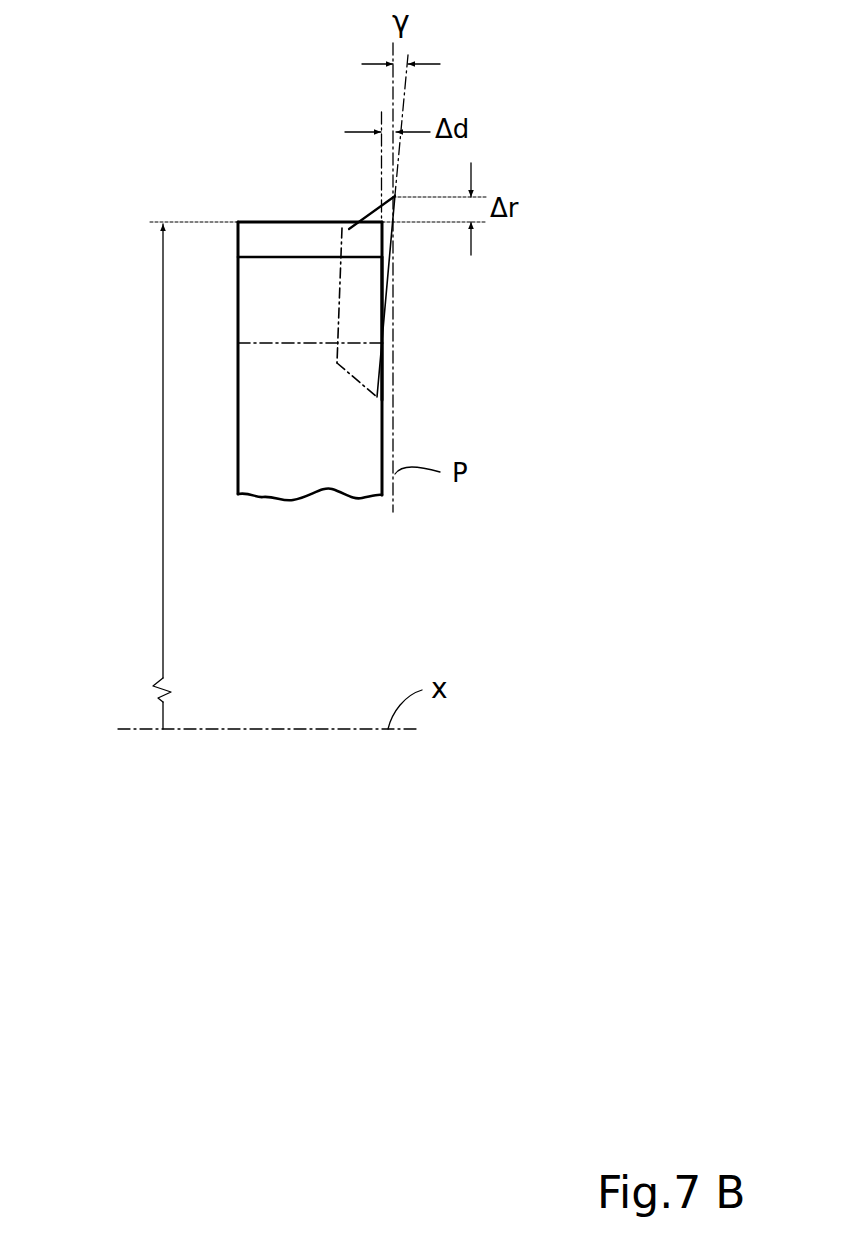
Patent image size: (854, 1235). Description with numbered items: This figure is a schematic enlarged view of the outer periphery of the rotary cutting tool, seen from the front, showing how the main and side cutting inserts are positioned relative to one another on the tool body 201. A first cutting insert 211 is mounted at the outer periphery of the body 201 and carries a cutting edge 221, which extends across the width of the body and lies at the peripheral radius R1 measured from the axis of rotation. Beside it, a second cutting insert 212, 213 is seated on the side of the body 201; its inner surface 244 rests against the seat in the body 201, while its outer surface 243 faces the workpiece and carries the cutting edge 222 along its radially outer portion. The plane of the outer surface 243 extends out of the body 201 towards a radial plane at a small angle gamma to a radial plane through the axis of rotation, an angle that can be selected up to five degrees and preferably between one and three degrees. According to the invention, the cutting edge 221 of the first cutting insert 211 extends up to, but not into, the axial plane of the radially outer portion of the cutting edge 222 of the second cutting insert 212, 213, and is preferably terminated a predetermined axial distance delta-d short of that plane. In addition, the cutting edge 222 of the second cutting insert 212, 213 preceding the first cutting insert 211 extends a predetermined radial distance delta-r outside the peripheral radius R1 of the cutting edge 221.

The body 201 is at (260, 437).
The first cutting insert 211 is at (250, 240).
The cutting edge 221 is at (298, 220).
The second cutting insert 212 is at (478, 296).
The second cutting insert 213 is at (387, 283).
The cutting edge 222 is at (496, 319).
The outer surface 243 is at (382, 375).
The inner surface 244 is at (335, 348).
The peripheral radius R1 is at (163, 310).